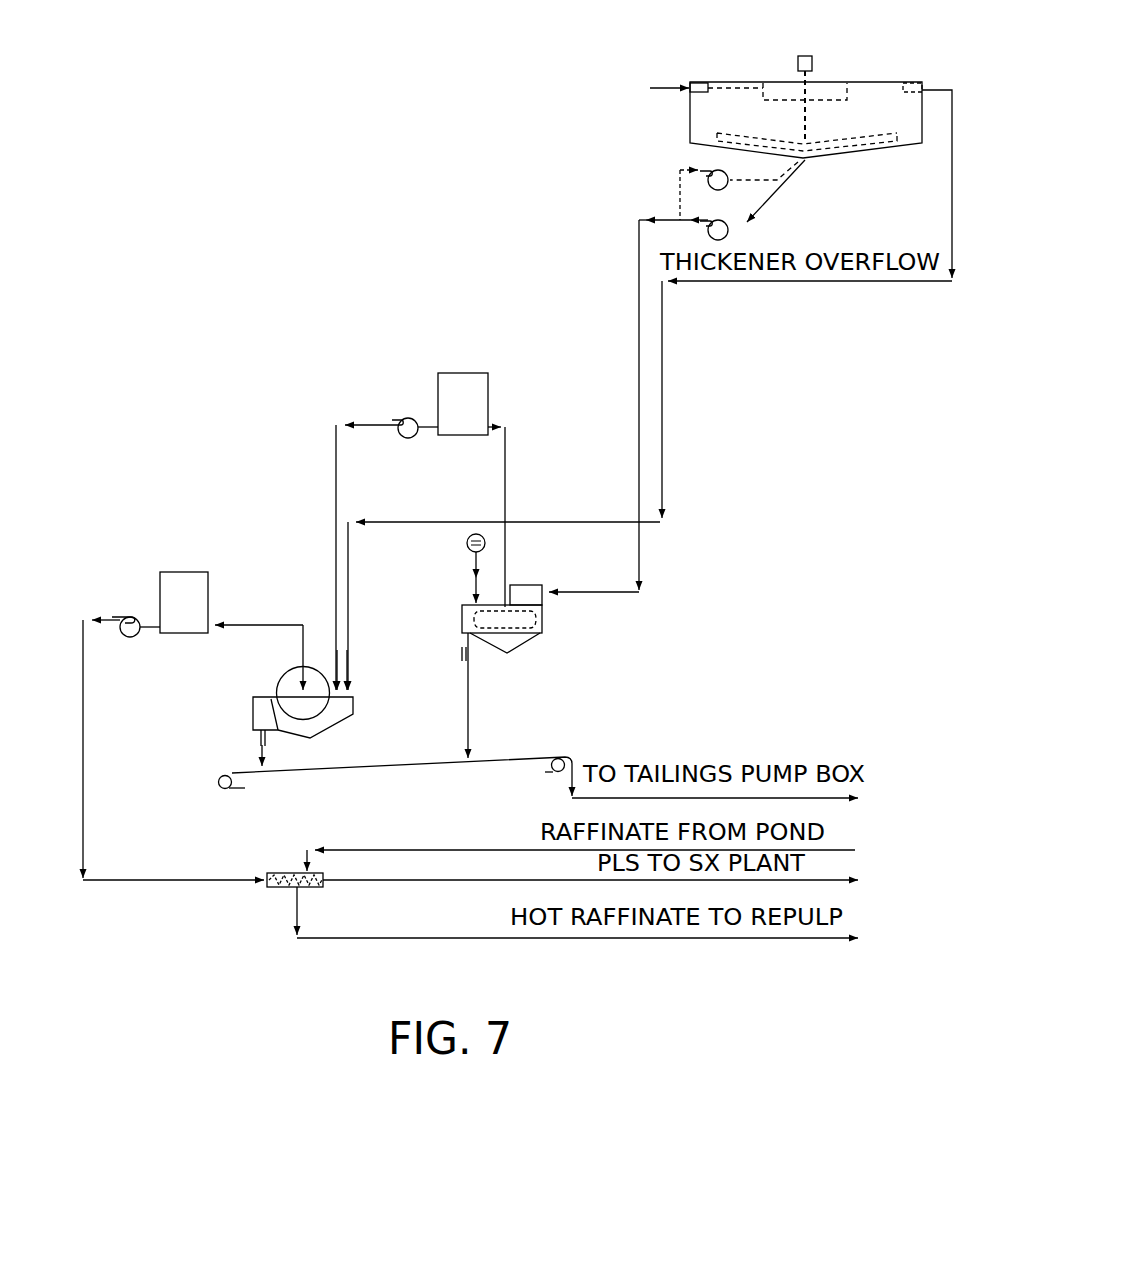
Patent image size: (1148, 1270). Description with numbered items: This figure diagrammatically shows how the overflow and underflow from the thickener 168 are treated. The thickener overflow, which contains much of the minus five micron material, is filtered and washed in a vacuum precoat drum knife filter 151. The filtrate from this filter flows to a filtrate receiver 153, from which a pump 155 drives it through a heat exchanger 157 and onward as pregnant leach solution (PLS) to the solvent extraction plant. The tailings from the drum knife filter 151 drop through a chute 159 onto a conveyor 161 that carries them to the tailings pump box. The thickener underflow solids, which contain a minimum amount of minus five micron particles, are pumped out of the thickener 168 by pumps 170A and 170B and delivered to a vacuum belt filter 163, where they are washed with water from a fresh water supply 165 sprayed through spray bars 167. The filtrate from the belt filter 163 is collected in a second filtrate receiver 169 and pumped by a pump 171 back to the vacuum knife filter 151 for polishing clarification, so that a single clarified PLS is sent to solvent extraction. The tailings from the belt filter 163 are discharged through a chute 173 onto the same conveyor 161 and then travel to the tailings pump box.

The vacuum precoat drum knife filter 151 is at (340, 713).
The filtrate receiver 153 is at (200, 588).
The pump 155 is at (137, 636).
The heat exchanger 157 is at (281, 871).
The chute 159 is at (255, 742).
The conveyor 161 is at (413, 769).
The vacuum belt filter 163 is at (540, 625).
The fresh water supply 165 is at (467, 541).
The spray bars 167 is at (480, 591).
The thickener 168 is at (871, 92).
The filtrate receiver 169 is at (477, 402).
The pump 170A is at (740, 232).
The pump 170B is at (716, 171).
The pump 171 is at (400, 421).
The chute 173 is at (472, 652).